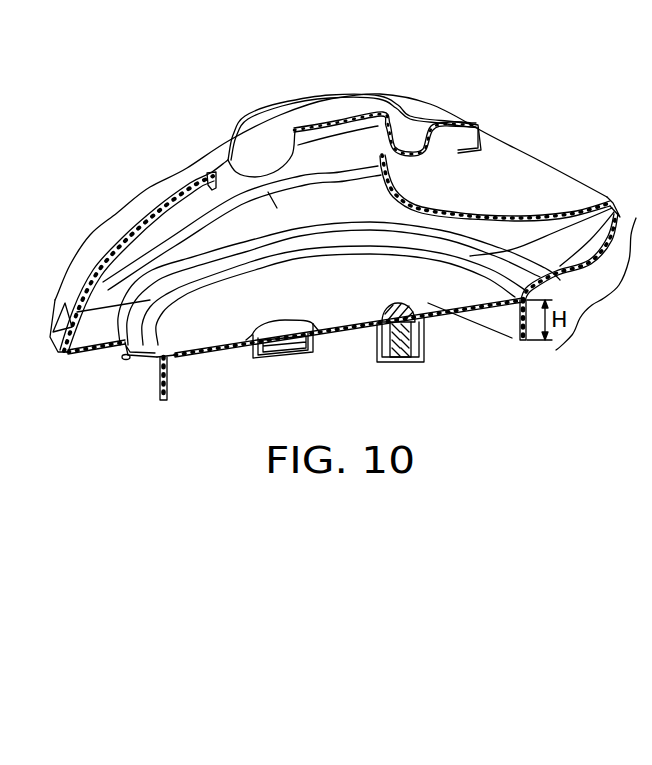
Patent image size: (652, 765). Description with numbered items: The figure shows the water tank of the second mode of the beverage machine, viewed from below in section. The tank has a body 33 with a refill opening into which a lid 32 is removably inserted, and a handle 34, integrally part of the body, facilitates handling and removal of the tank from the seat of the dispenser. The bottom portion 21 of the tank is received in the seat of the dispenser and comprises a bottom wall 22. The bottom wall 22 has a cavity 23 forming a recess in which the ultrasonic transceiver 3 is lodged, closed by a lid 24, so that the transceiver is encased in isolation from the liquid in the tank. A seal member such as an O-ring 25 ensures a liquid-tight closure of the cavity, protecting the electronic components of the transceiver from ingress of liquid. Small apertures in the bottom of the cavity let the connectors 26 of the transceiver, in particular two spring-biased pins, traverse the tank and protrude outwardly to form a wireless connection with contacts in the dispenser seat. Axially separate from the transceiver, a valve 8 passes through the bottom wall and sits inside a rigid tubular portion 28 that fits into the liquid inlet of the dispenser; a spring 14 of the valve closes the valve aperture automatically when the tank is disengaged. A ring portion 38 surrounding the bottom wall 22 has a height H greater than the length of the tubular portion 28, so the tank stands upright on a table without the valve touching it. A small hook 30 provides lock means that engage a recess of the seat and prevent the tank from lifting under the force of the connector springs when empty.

The body 33 is at (153, 187).
The lid 32 is at (373, 112).
The handle 34 is at (548, 172).
The bottom portion 21 is at (580, 282).
The bottom wall 22 is at (195, 356).
The hook 30 is at (124, 357).
The ring portion 38 is at (160, 383).
The lid 24 is at (282, 328).
The O-ring 25 is at (310, 332).
The cavity 23 is at (313, 345).
The connectors 26 is at (268, 360).
The ultrasonic transceiver 3 is at (290, 350).
The spring 14 is at (414, 315).
The tubular portion 28 is at (430, 332).
The valve 8 is at (434, 356).